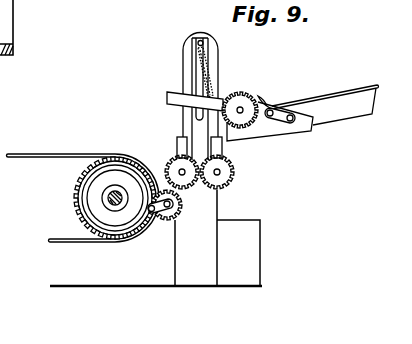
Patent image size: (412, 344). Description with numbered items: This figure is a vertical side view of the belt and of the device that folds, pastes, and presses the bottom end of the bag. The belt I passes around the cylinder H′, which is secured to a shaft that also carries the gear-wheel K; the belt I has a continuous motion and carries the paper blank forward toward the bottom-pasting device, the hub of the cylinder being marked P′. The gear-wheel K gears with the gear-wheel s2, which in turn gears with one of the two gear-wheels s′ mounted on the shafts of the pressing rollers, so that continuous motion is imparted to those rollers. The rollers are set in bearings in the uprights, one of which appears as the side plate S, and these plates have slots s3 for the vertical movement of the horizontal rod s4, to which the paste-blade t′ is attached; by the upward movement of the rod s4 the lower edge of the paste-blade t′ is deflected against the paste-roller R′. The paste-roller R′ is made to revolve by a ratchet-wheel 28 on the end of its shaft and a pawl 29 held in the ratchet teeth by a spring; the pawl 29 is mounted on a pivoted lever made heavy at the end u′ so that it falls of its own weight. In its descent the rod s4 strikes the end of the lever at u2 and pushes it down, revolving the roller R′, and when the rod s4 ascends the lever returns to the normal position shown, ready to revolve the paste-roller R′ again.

The belt I is at (83, 188).
The gear-wheel K is at (80, 186).
The cylinder H′ is at (80, 218).
The hub shaft P′ is at (116, 202).
The gear-wheel s2 is at (183, 208).
The gear-wheels s′ is at (170, 165).
The slide guide S is at (183, 123).
The slots s3 is at (197, 78).
The paste-blade t′ is at (219, 91).
The horizontal rod s4 is at (200, 39).
The end of the lever u2 is at (168, 105).
The heavy end of the lever u′ is at (304, 128).
The paste-roller R′ is at (223, 97).
The pawl 29 is at (269, 105).
The ratchet-wheel 28 is at (253, 95).